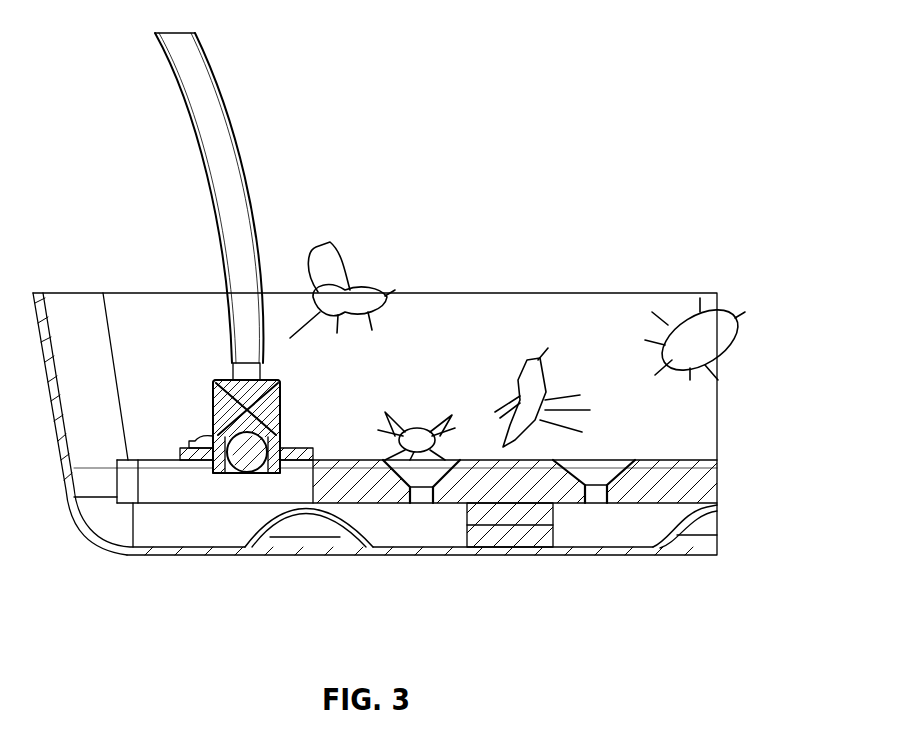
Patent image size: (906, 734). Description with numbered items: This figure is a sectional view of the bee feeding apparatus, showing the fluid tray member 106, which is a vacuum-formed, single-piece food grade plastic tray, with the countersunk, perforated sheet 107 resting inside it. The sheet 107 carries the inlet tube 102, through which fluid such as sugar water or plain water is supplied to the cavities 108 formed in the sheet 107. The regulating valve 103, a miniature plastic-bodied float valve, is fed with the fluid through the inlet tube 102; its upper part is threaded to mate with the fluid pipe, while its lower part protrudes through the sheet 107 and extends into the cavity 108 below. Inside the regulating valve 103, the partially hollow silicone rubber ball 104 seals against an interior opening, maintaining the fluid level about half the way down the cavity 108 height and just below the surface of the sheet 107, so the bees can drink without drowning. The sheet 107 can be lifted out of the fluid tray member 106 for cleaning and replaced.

The inlet tube 102 is at (237, 133).
The regulating valve 103 is at (213, 418).
The ball 104 is at (247, 458).
The fluid tray member 106 is at (640, 555).
The sheet 107 is at (687, 460).
The cavities 108 is at (595, 472).